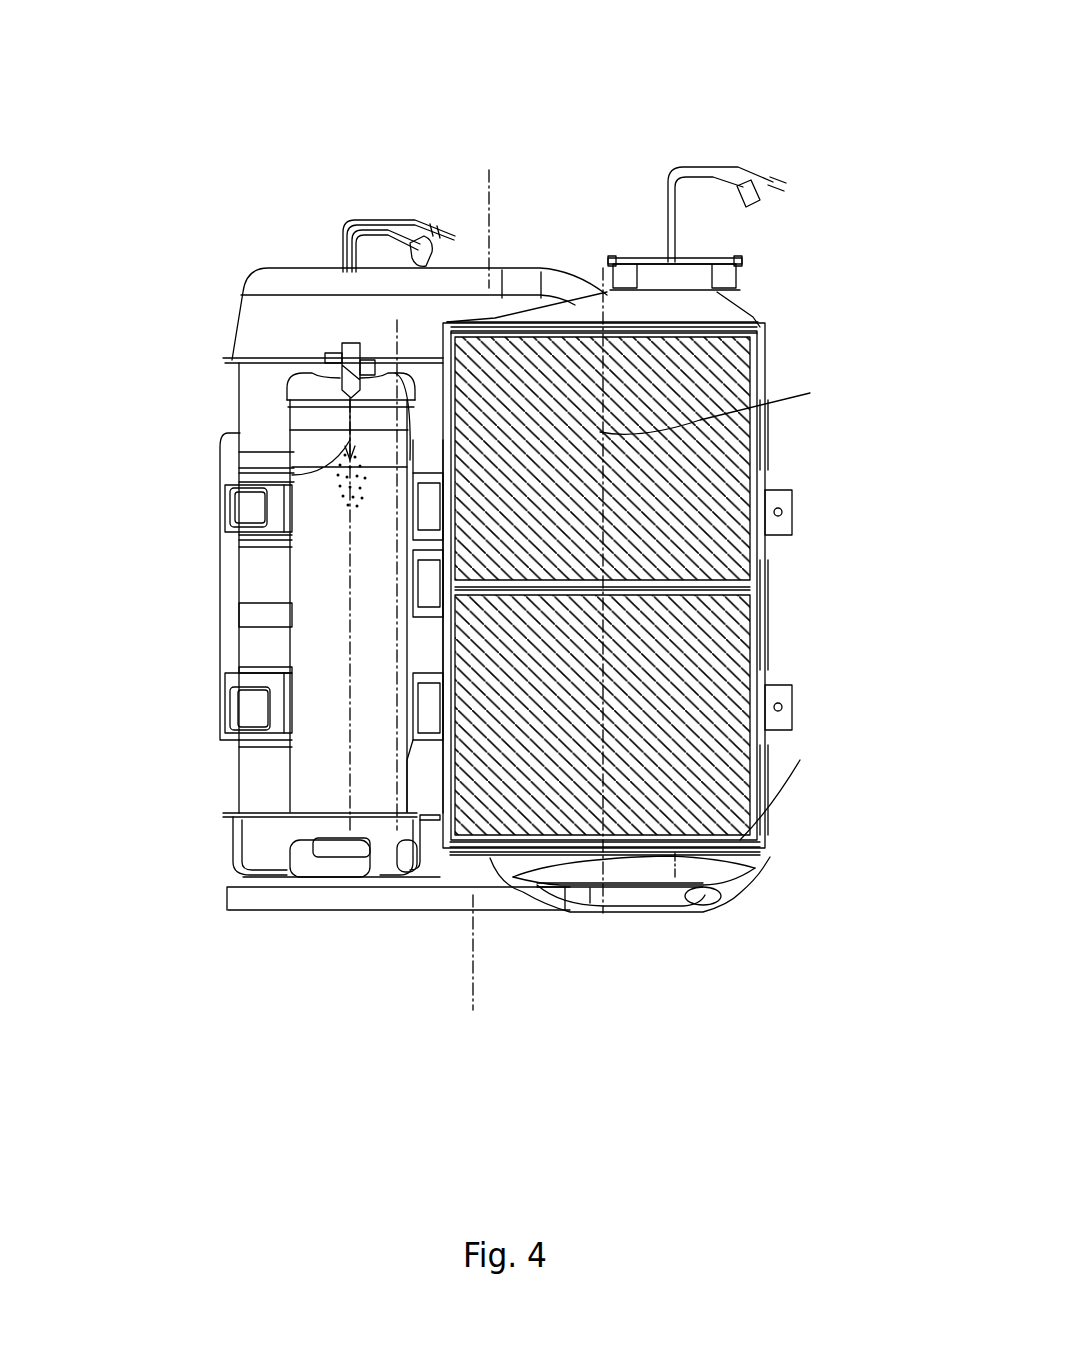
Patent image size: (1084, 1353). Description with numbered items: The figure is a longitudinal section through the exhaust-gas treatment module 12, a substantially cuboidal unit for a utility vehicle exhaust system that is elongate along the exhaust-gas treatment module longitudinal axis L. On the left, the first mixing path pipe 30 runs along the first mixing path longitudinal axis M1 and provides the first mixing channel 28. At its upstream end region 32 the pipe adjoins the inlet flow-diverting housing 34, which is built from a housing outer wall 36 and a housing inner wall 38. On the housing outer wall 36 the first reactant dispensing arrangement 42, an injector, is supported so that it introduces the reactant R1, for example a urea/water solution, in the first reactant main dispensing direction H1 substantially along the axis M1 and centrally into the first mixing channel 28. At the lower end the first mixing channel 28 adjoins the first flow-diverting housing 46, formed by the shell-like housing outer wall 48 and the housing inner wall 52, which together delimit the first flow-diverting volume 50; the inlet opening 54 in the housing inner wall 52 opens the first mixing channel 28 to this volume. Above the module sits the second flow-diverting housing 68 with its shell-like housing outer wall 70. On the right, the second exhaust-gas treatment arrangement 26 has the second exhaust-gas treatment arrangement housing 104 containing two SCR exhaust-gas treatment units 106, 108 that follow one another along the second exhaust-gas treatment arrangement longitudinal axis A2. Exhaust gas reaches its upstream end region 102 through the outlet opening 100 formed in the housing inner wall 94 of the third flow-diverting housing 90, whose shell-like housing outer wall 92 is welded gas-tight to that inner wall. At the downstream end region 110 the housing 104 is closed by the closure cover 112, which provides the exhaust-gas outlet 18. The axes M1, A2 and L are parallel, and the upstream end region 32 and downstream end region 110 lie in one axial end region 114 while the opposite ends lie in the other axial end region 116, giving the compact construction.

The exhaust-gas treatment module 12 is at (160, 137).
The exhaust-gas outlet 18 is at (720, 262).
The second exhaust-gas treatment arrangement 26 is at (820, 600).
The first mixing channel 28 is at (310, 647).
The first mixing path pipe 30 is at (265, 622).
The upstream end region 32 is at (240, 434).
The inlet flow-diverting housing 34 is at (290, 415).
The housing outer wall 36 is at (310, 378).
The housing inner wall 38 is at (345, 438).
The first reactant dispensing arrangement 42 is at (300, 360).
The first flow-diverting housing 46 is at (235, 870).
The housing outer wall 48 is at (235, 834).
The first flow-diverting volume 50 is at (320, 858).
The housing inner wall 52 is at (245, 810).
The inlet opening 54 is at (386, 820).
The second flow-diverting housing 68 is at (270, 265).
The housing outer wall 70 is at (508, 268).
The third flow-diverting housing 90 is at (733, 900).
The housing outer wall 92 is at (668, 917).
The housing inner wall 94 is at (770, 850).
The outlet opening 100 is at (760, 820).
The upstream end region 102 is at (808, 795).
The second exhaust-gas treatment arrangement housing 104 is at (760, 585).
The exhaust-gas treatment unit 106 is at (740, 692).
The exhaust-gas treatment unit 108 is at (740, 455).
The downstream end region 110 is at (786, 352).
The closure cover 112 is at (556, 314).
The axial end region 114 is at (440, 186).
The axial end region 116 is at (415, 960).
The exhaust-gas treatment module longitudinal axis L is at (474, 988).
The first reactant main dispensing direction H1 is at (345, 472).
The reactant R1 is at (348, 515).
The first mixing path longitudinal axis M1 is at (343, 682).
The second exhaust-gas treatment arrangement longitudinal axis A2 is at (843, 410).